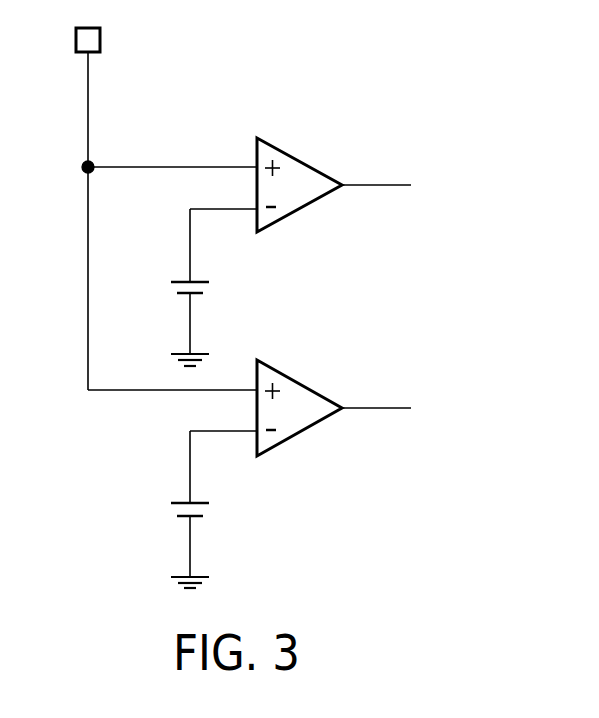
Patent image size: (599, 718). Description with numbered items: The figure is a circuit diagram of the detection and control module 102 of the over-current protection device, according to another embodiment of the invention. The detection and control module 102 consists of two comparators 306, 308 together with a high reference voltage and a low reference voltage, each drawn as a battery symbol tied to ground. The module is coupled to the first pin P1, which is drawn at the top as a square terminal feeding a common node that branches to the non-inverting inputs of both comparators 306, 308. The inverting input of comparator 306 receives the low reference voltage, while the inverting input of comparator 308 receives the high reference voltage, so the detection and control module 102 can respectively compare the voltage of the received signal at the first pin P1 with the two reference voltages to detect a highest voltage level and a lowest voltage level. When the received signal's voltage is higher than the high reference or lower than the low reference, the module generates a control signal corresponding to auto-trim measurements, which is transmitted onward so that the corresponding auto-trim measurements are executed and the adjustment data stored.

The detection and control module 102 is at (468, 58).
The comparator 306 is at (302, 160).
The comparator 308 is at (302, 381).
The first pin P1 is at (76, 36).